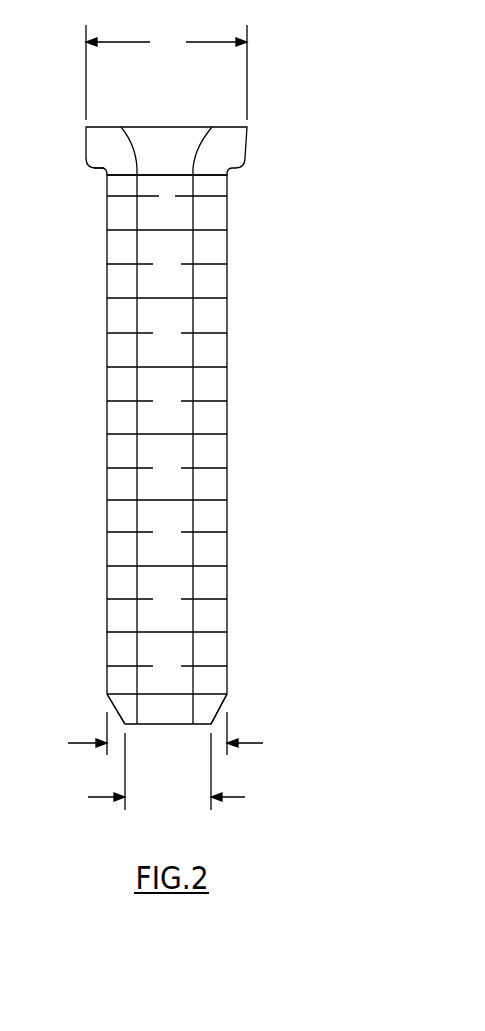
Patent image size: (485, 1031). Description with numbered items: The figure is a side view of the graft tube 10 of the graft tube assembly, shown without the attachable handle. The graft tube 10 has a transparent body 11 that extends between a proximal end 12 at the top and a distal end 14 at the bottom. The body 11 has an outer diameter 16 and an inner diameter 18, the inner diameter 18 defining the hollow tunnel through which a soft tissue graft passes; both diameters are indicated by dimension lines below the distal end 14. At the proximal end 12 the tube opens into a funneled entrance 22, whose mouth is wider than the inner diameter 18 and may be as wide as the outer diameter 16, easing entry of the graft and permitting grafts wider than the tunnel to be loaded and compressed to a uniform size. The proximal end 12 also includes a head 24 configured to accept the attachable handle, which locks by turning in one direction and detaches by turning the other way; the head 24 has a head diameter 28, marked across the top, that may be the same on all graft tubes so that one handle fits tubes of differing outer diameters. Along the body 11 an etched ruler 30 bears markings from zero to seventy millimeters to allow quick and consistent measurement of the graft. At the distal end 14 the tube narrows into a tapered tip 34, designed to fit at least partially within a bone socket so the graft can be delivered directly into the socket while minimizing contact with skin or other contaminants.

The graft tube 10 is at (138, 407).
The body 11 is at (115, 352).
The proximal end 12 is at (115, 188).
The distal end 14 is at (118, 680).
The outer diameter 16 is at (258, 743).
The inner diameter 18 is at (240, 797).
The funneled entrance 22 is at (232, 127).
The head 24 is at (108, 155).
The head diameter 28 is at (166, 72).
The etched ruler 30 is at (116, 265).
The tapered tip 34 is at (110, 706).